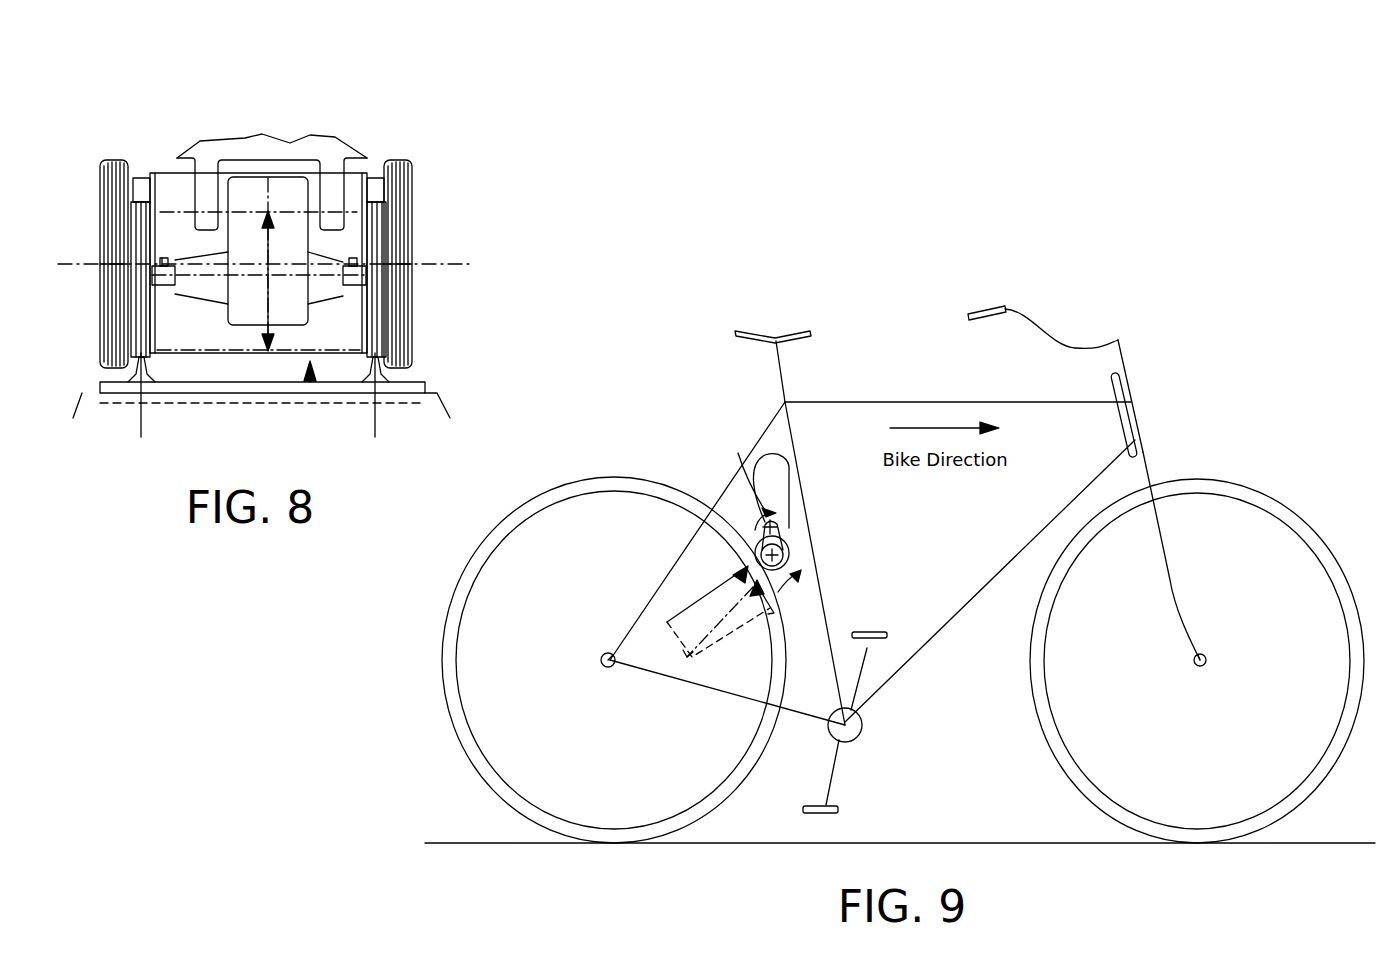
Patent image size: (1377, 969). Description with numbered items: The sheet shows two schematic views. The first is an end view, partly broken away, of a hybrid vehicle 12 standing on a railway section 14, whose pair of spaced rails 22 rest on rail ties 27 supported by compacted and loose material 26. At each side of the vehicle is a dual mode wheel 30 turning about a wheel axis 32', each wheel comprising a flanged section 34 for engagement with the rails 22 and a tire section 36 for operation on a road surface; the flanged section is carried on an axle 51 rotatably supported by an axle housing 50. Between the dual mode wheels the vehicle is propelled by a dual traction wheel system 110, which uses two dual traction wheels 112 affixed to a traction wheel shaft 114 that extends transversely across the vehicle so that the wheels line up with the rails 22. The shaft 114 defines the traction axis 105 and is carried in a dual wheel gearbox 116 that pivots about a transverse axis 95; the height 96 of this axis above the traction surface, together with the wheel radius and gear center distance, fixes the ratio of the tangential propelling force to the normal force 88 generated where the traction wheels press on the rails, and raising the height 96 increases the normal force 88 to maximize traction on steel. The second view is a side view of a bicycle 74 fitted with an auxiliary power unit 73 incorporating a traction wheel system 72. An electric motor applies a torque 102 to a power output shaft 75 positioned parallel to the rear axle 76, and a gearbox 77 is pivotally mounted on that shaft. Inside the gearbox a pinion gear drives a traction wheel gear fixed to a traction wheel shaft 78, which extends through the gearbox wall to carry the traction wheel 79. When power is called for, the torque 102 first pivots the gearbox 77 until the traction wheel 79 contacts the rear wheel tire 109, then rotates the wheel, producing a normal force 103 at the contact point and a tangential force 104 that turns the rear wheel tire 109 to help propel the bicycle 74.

In FIG. 8, the hybrid vehicle 12 is at (330, 138).
In FIG. 8, the railway section 14 is at (470, 328).
In FIG. 8, the rails 22 is at (150, 378).
In FIG. 8, the compacted and loose material 26 is at (447, 403).
In FIG. 8, the rail ties 27 is at (426, 384).
In FIG. 8, the dual mode wheel 30 is at (128, 110).
In FIG. 8, the wheel axis 32' is at (260, 242).
In FIG. 8, the flanged section 34 is at (143, 178).
In FIG. 8, the tire section 36 is at (104, 160).
In FIG. 8, the axle housing 50 is at (162, 260).
In FIG. 8, the axle 51 is at (165, 262).
In FIG. 8, the normal force 88 is at (141, 425).
In FIG. 8, the transverse axis 95 is at (253, 212).
In FIG. 8, the height of the transverse axis 96 is at (276, 340).
In FIG. 8, the traction axis 105 is at (243, 283).
In FIG. 8, the dual traction wheel system 110 is at (310, 382).
In FIG. 8, the dual traction wheels 112 is at (141, 202).
In FIG. 8, the traction wheel shaft 114 is at (173, 296).
In FIG. 8, the dual wheel gearbox 116 is at (235, 330).
In FIG. 9, the traction wheel system 72 is at (812, 528).
In FIG. 9, the auxiliary power unit 73 is at (788, 462).
In FIG. 9, the bicycle 74 is at (888, 400).
In FIG. 9, the power output shaft 75 is at (792, 528).
In FIG. 9, the rear axle 76 is at (603, 656).
In FIG. 9, the gearbox 77 is at (786, 543).
In FIG. 9, the traction wheel shaft 78 is at (783, 553).
In FIG. 9, the traction wheel 79 is at (792, 563).
In FIG. 9, the torque 102 is at (760, 527).
In FIG. 9, the normal force 103 is at (690, 603).
In FIG. 9, the tangential force 104 is at (772, 607).
In FIG. 9, the rear wheel tire 109 is at (613, 477).